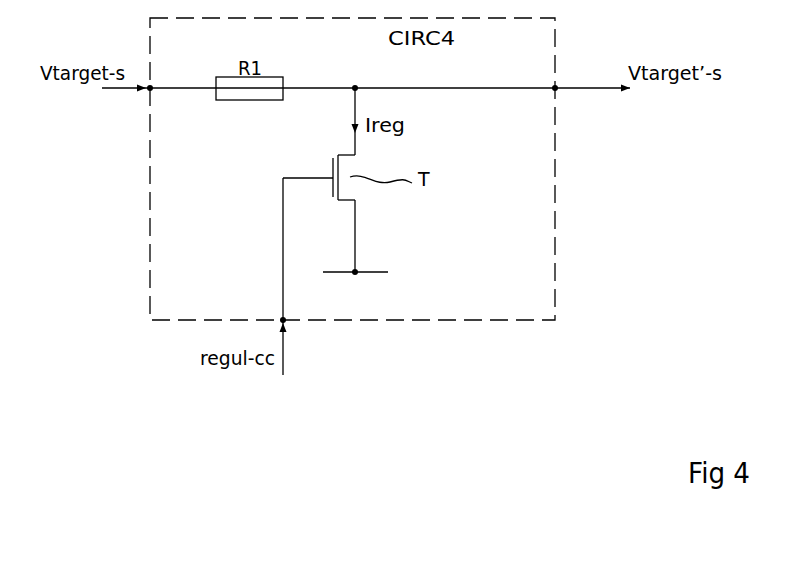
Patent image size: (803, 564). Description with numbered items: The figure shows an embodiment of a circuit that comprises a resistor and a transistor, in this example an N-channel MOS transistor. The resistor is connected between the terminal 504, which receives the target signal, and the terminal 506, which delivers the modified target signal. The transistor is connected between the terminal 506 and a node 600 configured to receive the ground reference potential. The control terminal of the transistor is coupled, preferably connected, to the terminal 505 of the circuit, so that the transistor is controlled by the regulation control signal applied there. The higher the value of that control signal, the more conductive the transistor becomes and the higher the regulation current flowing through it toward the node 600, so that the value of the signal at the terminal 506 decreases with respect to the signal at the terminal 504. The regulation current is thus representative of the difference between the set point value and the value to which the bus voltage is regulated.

The terminal 504 is at (152, 87).
The terminal 505 is at (287, 324).
The terminal 506 is at (557, 86).
The node 600 is at (357, 270).